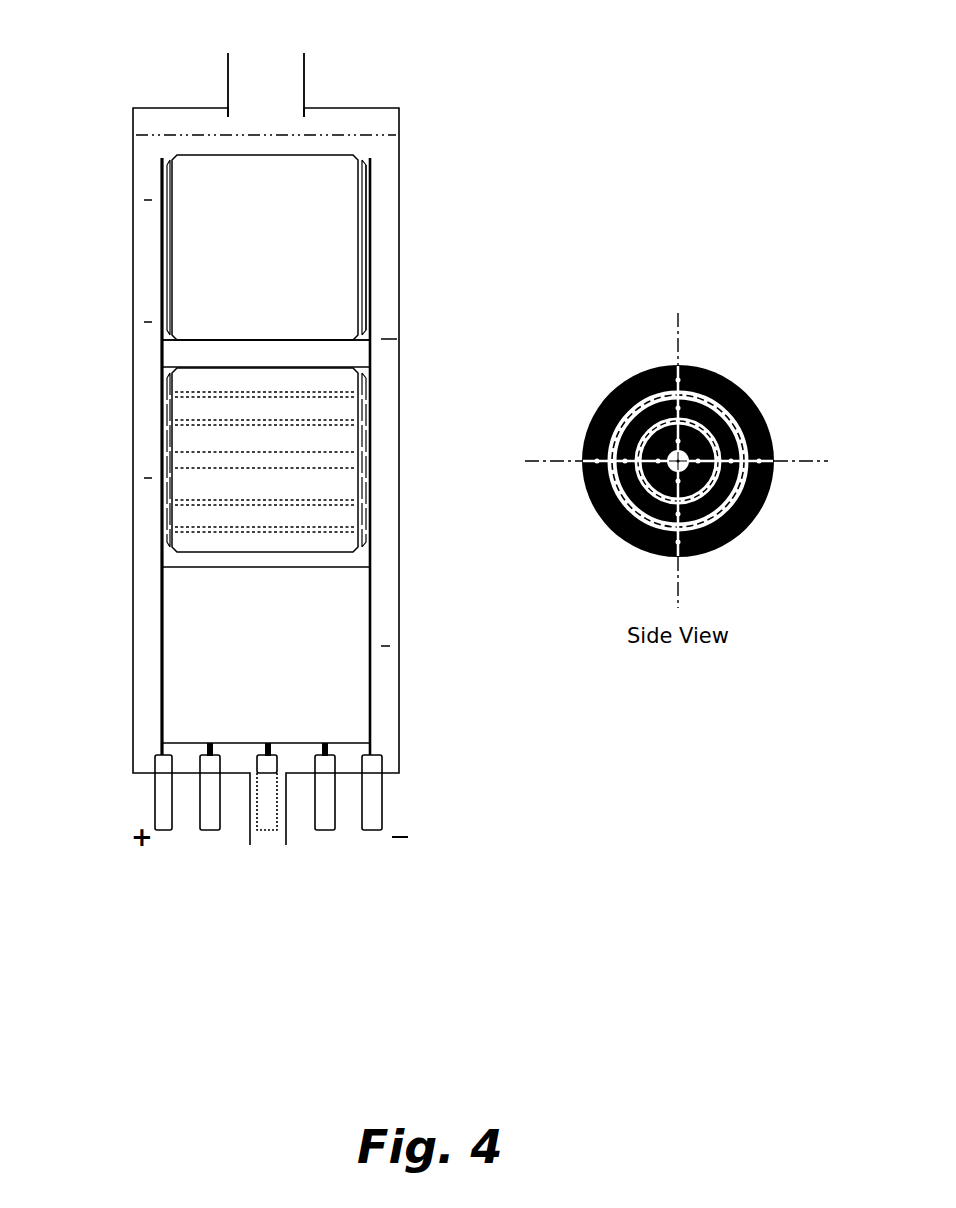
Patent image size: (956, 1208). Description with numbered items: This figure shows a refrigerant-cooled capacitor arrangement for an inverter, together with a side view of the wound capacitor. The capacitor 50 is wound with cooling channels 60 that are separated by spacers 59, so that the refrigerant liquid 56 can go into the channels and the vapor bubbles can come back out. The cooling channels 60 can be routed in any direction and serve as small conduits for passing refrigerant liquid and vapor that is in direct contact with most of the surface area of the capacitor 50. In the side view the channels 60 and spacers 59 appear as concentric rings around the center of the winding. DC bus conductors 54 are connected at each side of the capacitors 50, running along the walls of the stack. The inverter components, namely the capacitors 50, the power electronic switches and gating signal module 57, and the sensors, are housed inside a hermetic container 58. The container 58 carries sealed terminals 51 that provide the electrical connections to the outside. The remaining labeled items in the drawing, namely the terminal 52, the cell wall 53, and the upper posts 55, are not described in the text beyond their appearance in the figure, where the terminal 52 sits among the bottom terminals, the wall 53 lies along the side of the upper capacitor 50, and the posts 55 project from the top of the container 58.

The capacitor 50 is at (205, 283).
The sealed terminals 51 is at (320, 825).
The sense terminal 52 is at (270, 830).
The cell wall 53 is at (367, 222).
The DC bus conductors 54 is at (162, 370).
The top terminal posts 55 is at (270, 67).
The refrigerant liquid 56 is at (335, 135).
The power electronic switches and gating signal module 57 is at (337, 653).
The hermetic container 58 is at (399, 698).
The spacers 59 is at (618, 492).
The cooling channels 60 is at (705, 525).